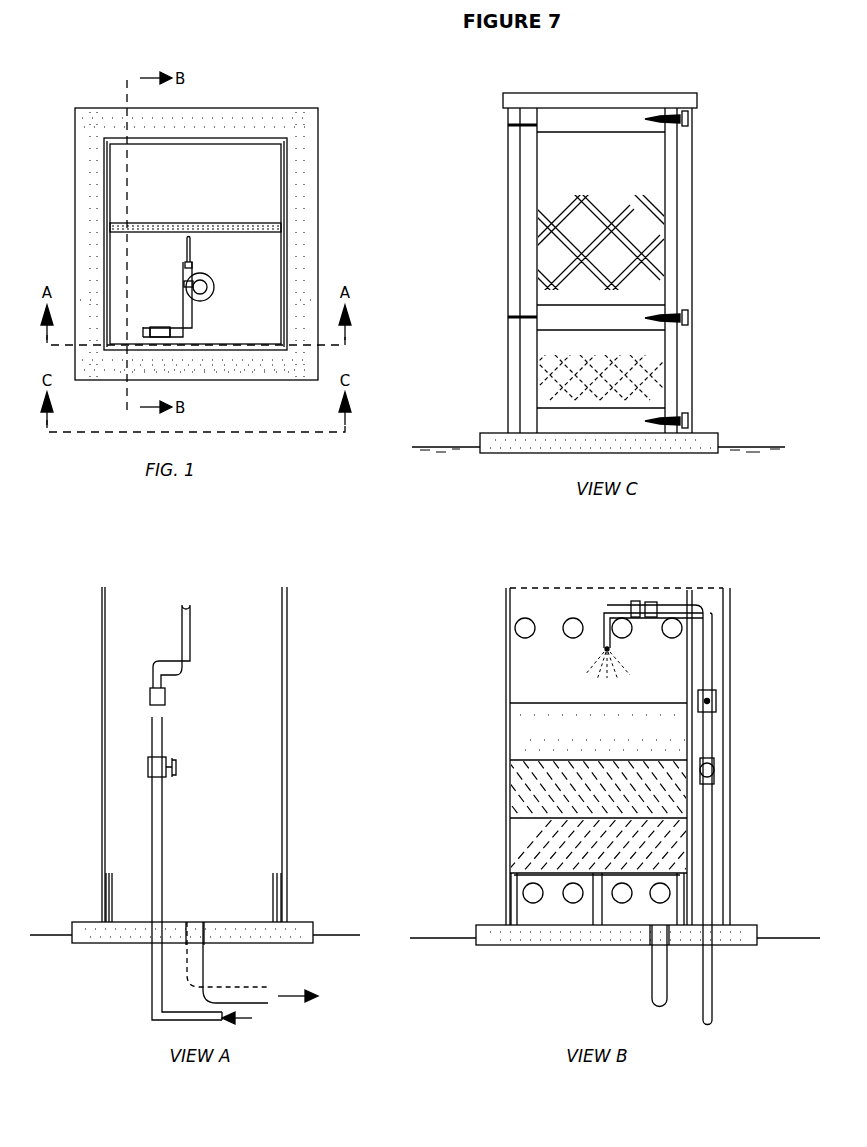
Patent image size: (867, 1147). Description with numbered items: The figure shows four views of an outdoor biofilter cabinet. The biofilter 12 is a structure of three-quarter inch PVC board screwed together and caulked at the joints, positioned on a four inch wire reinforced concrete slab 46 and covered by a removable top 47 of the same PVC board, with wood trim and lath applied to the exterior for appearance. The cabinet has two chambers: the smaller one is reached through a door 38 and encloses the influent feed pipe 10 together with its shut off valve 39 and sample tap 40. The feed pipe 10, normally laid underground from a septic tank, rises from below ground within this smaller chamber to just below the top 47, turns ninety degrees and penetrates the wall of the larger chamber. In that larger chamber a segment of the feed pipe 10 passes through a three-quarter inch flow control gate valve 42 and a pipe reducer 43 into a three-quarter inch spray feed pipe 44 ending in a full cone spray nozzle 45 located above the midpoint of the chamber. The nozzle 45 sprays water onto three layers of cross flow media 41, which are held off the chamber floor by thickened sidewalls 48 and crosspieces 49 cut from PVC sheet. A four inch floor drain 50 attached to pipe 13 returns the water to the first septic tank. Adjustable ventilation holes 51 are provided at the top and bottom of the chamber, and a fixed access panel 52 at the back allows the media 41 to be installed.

The influent feed pipe 10 is at (193, 329).
The biofilter 12 is at (194, 754).
The return pipe 13 is at (212, 288).
The door 38 is at (250, 353).
The shut off valve 39 is at (176, 768).
The sample tap 40 is at (150, 337).
The cross flow media 41 is at (603, 791).
The flow control gate valve 42 is at (184, 265).
The pipe reducer 43 is at (184, 285).
The spray feed pipe 44 is at (190, 246).
The full cone spray nozzle 45 is at (604, 650).
The concrete slab 46 is at (76, 134).
The removable top 47 is at (664, 93).
The thickened sidewalls 48 is at (112, 150).
The crosspieces 49 is at (178, 223).
The floor drain 50 is at (199, 278).
The adjustable ventilation holes 51 is at (532, 620).
The fixed access panel 52 is at (213, 130).